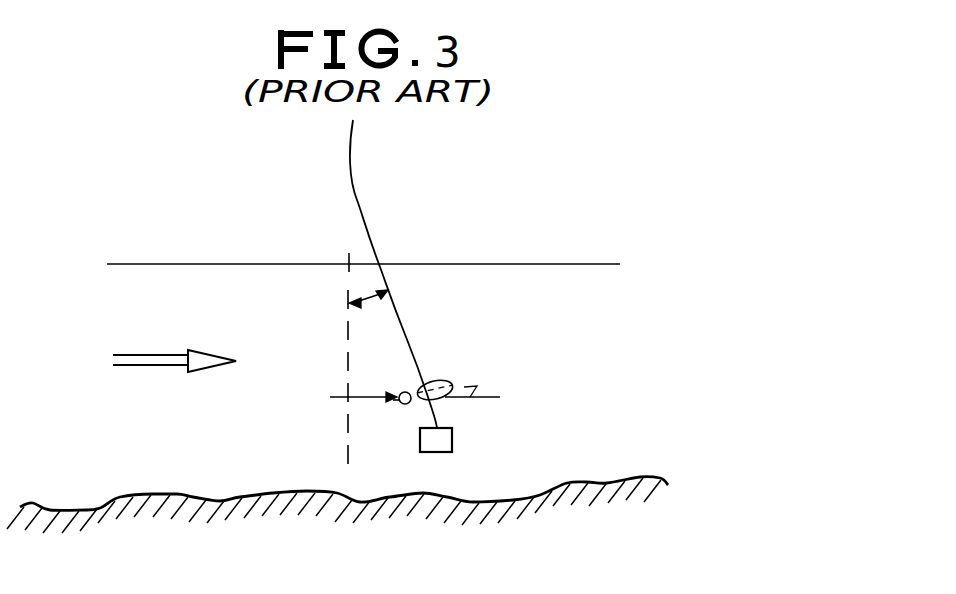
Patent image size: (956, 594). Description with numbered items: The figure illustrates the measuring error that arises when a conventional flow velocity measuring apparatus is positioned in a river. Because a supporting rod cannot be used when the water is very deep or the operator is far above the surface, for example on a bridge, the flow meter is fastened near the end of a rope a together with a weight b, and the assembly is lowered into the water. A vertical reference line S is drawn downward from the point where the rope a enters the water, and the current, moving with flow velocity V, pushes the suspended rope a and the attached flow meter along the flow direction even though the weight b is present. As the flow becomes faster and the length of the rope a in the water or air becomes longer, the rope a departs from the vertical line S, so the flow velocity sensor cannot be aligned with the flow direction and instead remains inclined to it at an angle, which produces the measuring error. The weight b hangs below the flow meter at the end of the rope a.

The rope a is at (366, 238).
The weight b is at (451, 438).
The vertical reference line S is at (347, 270).
The current velocity V is at (363, 385).